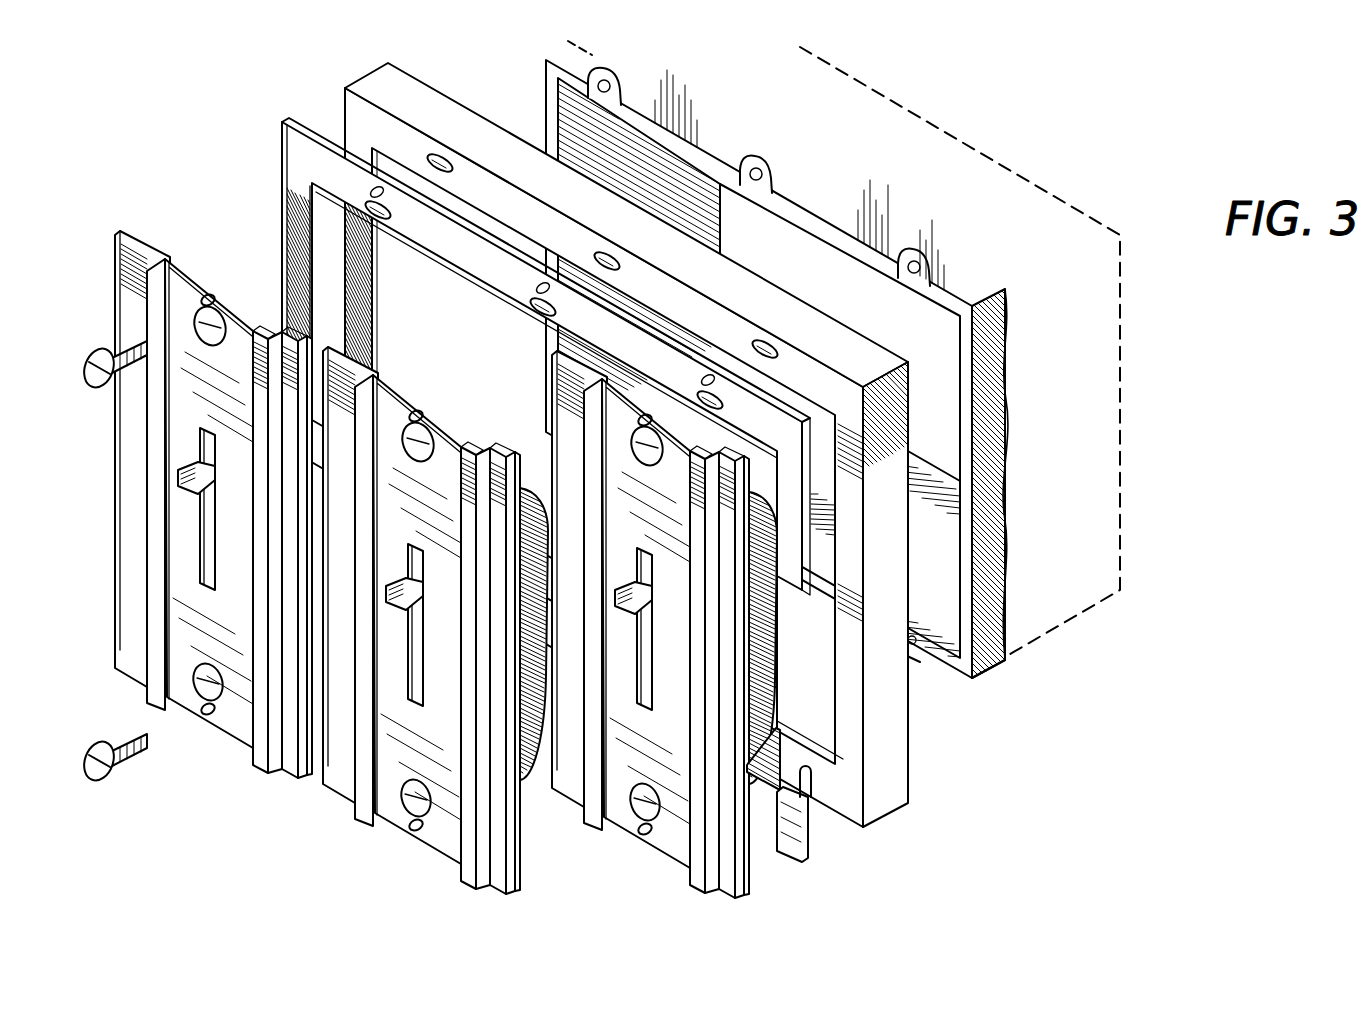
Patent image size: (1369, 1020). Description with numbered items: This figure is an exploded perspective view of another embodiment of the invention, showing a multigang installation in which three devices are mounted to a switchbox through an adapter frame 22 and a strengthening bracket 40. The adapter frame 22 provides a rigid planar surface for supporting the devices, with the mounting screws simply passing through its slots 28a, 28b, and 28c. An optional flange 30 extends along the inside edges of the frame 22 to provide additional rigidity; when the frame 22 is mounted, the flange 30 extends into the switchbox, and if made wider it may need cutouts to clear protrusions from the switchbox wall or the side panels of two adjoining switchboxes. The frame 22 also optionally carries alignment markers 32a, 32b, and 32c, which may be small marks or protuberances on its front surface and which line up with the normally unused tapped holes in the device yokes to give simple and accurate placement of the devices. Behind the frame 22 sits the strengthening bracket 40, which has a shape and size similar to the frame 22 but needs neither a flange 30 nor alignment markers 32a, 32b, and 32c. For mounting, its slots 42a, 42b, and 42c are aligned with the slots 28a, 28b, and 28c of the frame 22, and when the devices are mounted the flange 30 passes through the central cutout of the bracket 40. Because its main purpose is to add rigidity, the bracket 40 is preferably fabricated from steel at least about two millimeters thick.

The adapter frame 22 is at (773, 838).
The flange 30 is at (806, 772).
The strengthening bracket 40 is at (658, 445).
The slot 42a is at (470, 125).
The slot 42b is at (638, 222).
The slot 42c is at (800, 314).
The slot 28a is at (366, 206).
The slot 28b is at (534, 309).
The slot 28c is at (700, 392).
The alignment marker 32a is at (385, 191).
The alignment marker 32b is at (540, 289).
The alignment marker 32c is at (715, 384).